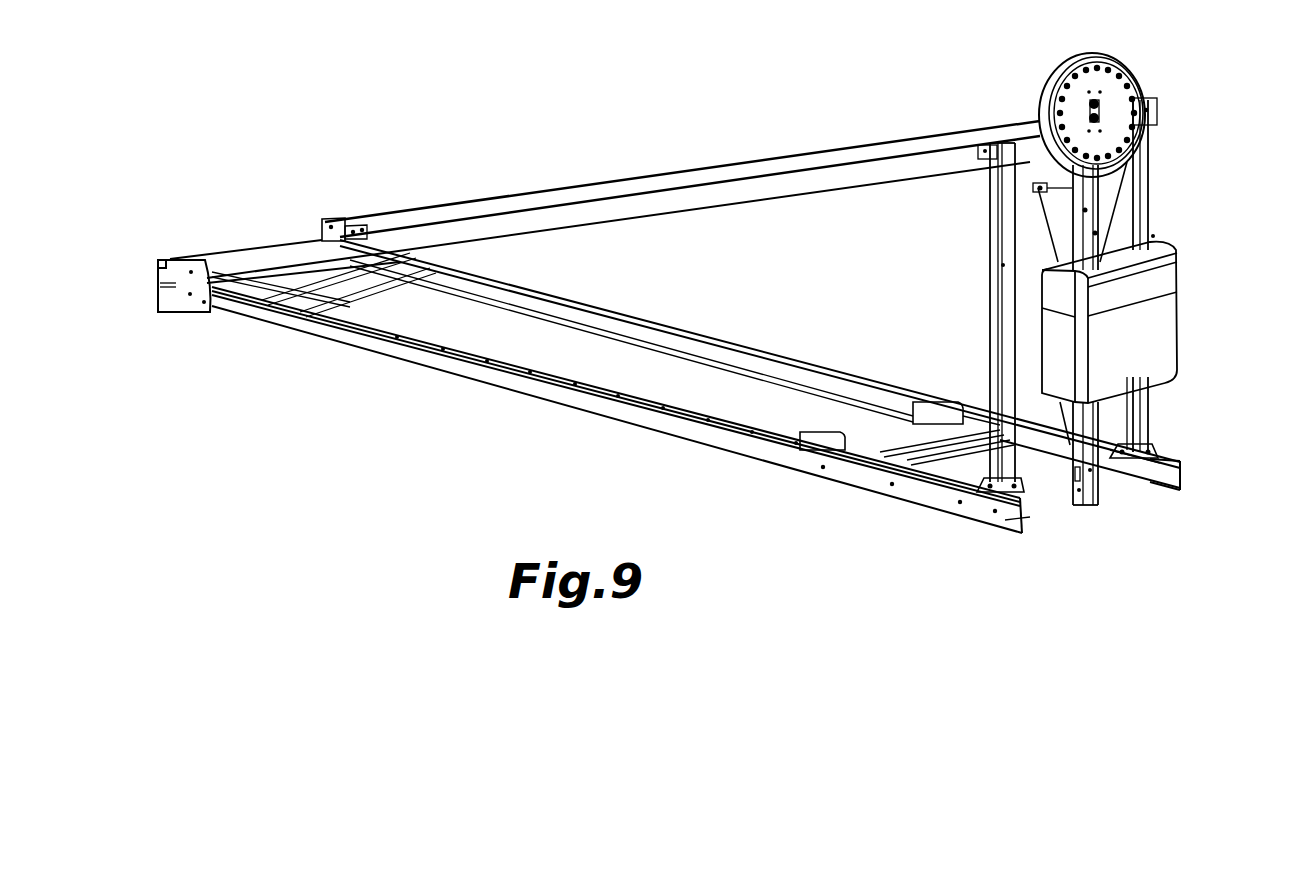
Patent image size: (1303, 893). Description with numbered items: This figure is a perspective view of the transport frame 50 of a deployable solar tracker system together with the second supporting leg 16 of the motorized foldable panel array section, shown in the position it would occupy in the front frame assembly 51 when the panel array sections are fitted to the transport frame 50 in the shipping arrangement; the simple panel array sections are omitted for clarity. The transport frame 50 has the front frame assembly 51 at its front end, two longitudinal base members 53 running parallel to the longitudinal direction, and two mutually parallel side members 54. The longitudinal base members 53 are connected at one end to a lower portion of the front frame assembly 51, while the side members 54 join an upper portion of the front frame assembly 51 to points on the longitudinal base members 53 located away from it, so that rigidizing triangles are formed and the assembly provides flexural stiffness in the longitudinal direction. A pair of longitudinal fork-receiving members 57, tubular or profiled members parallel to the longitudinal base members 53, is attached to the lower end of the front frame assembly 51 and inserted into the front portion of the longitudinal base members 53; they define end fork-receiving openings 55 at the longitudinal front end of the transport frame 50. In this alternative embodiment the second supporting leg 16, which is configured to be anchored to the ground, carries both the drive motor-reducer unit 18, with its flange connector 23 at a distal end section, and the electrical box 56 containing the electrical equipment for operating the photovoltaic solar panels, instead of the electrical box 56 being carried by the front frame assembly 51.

The transport frame 50 is at (667, 78).
The drive motor-reducer unit 18 is at (1053, 77).
The flange connector 23 is at (1103, 103).
The side member 54 is at (591, 188).
The front frame assembly 51 is at (1160, 191).
The longitudinal base member 53 is at (800, 358).
The longitudinal fork-receiving member 57 is at (956, 399).
The electrical box 56 is at (1160, 315).
The second supporting leg 16 is at (1158, 440).
The end fork-receiving opening 55 is at (1181, 478).